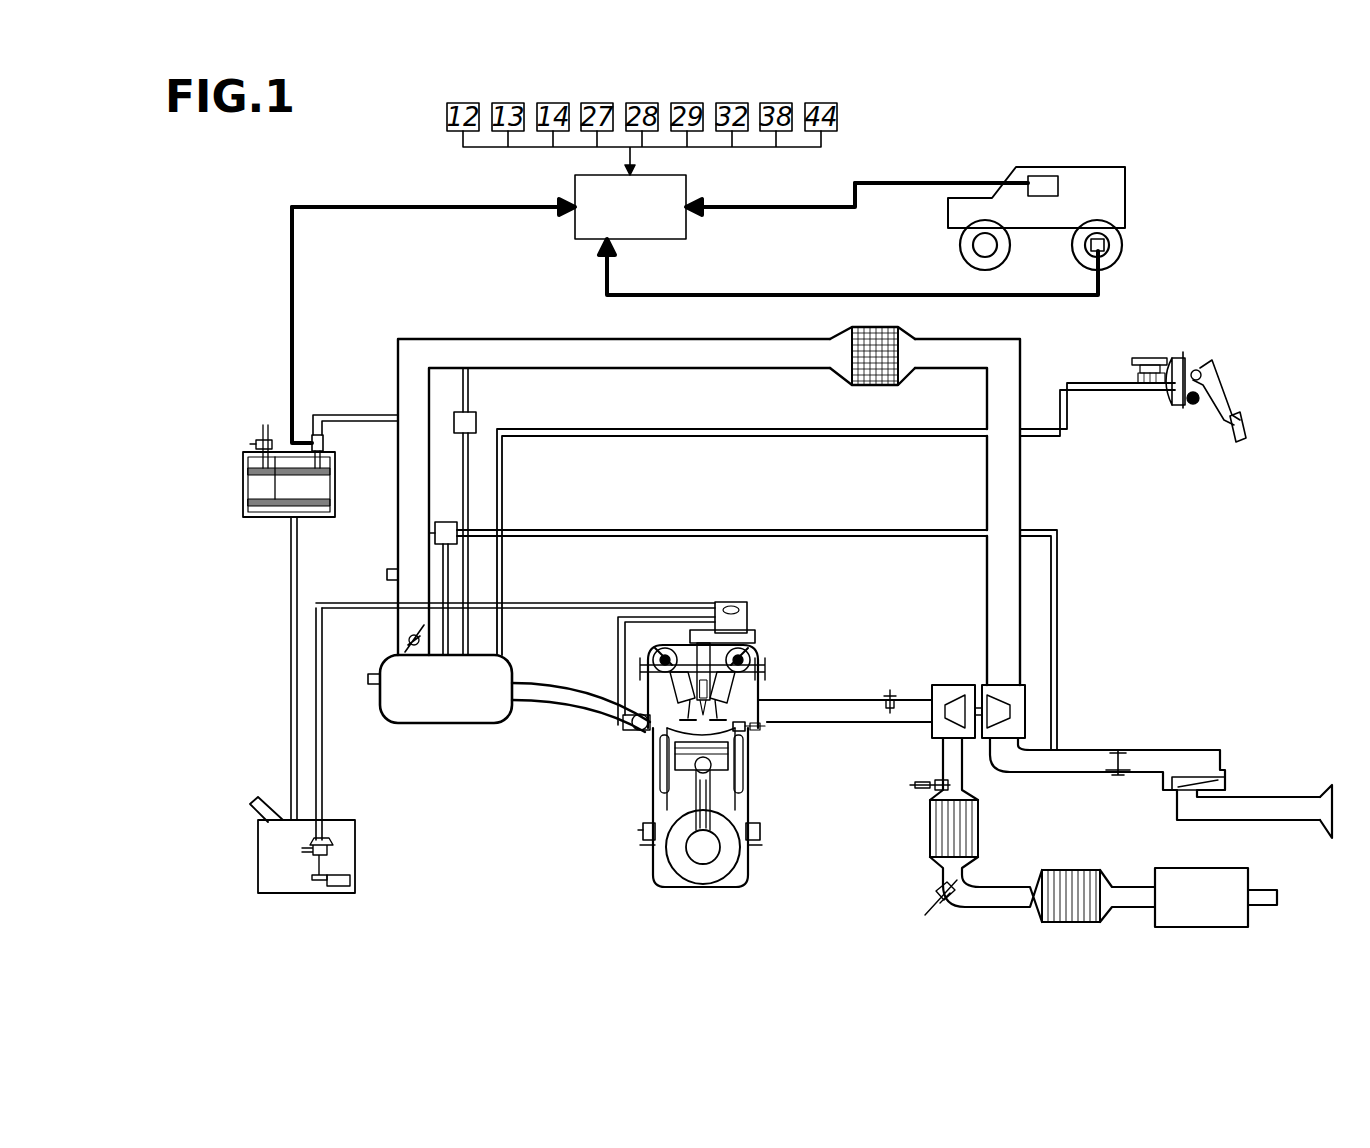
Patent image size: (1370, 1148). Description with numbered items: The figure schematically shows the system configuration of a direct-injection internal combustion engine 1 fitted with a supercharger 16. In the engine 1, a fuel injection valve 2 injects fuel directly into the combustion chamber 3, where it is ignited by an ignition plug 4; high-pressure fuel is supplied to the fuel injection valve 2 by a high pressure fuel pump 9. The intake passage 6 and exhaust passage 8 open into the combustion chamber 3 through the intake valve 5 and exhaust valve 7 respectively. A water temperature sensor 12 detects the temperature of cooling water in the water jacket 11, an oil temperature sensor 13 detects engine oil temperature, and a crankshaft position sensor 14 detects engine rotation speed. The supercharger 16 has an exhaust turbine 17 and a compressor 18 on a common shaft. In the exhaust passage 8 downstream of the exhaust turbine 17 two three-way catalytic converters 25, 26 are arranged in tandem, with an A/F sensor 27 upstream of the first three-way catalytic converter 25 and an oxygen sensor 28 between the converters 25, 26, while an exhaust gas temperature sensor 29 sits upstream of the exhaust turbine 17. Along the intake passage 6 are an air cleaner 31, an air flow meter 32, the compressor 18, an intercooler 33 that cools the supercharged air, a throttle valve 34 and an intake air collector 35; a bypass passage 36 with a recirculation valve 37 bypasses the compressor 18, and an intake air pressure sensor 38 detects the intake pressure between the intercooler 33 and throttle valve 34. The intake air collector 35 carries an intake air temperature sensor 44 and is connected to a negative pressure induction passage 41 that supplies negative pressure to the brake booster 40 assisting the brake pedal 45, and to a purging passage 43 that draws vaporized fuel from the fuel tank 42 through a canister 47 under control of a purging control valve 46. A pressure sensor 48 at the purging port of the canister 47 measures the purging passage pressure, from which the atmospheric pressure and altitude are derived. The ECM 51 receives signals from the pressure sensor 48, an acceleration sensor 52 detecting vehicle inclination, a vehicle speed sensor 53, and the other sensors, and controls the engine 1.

The internal combustion engine 1 is at (698, 762).
The fuel injection valve 2 is at (655, 735).
The combustion chamber 3 is at (672, 755).
The ignition plug 4 is at (770, 705).
The intake valve 5 is at (623, 708).
The intake passage 6 is at (495, 340).
The exhaust valve 7 is at (740, 690).
The exhaust passage 8 is at (1010, 898).
The high pressure fuel pump 9 is at (748, 618).
The water jacket 11 is at (745, 770).
The water temperature sensor 12 is at (760, 733).
The oil temperature sensor 13 is at (640, 832).
The crankshaft position sensor 14 is at (762, 832).
The supercharger 16 is at (1009, 748).
The exhaust turbine 17 is at (950, 718).
The compressor 18 is at (1005, 712).
The three-way catalytic converter 25 is at (970, 832).
The three-way catalytic converter 26 is at (1070, 868).
The A/F sensor 27 is at (918, 790).
The oxygen sensor 28 is at (933, 902).
The exhaust gas temperature sensor 29 is at (890, 688).
The air cleaner 31 is at (1190, 775).
The air flow meter 32 is at (1118, 777).
The intercooler 33 is at (880, 340).
The throttle valve 34 is at (405, 641).
The intake air collector 35 is at (447, 725).
The bypass passage 36 is at (725, 528).
The recirculation valve 37 is at (445, 520).
The intake air pressure sensor 38 is at (385, 574).
The brake booster 40 is at (1150, 355).
The negative pressure induction passage 41 is at (710, 428).
The fuel tank 42 is at (256, 856).
The purging passage 43 is at (370, 414).
The intake air temperature sensor 44 is at (372, 686).
The brake pedal 45 is at (1242, 428).
The purging control valve 46 is at (478, 418).
The canister 47 is at (243, 468).
The pressure sensor 48 is at (325, 443).
The ECM 51 is at (690, 237).
The acceleration sensor 52 is at (1043, 174).
The vehicle speed sensor 53 is at (1106, 245).